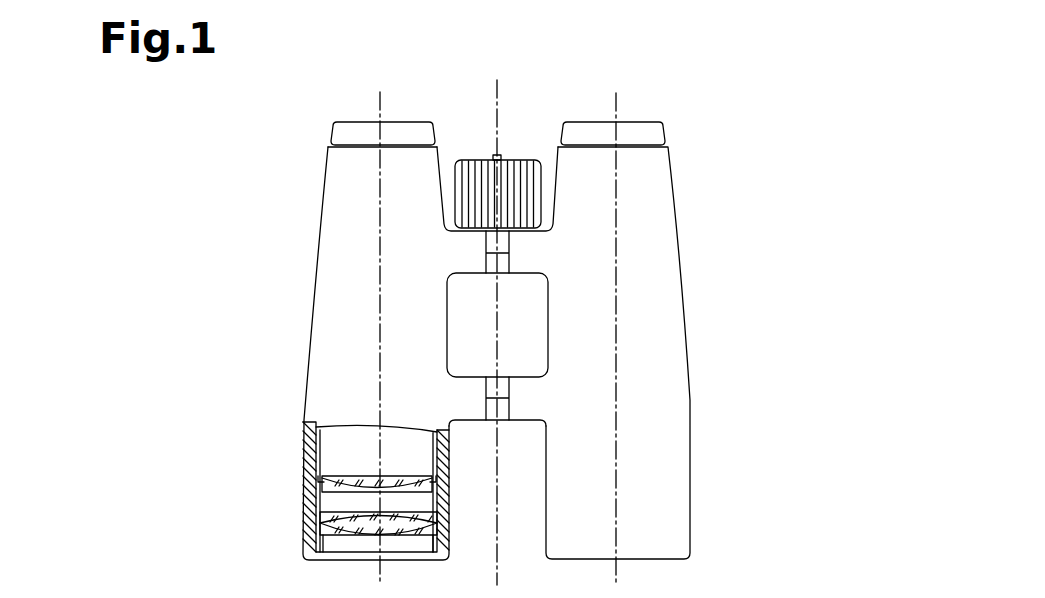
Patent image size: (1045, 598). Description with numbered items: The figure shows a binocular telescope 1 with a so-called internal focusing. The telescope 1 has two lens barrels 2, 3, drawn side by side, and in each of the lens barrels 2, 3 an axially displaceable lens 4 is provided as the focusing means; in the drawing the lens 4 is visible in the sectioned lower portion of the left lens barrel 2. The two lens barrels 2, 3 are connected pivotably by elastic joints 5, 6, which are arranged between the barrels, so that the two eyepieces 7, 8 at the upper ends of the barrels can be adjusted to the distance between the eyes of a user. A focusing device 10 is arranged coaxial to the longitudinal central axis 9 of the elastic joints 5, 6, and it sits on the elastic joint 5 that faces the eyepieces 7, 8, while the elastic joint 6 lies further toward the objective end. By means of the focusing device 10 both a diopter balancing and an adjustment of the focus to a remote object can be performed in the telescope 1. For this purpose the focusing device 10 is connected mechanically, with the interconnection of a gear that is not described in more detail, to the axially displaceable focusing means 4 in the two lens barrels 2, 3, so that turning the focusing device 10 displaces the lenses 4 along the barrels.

The binocular telescope 1 is at (797, 97).
The lens barrel 2 is at (326, 192).
The lens barrel 3 is at (669, 204).
The axially displaceable lens 4 is at (350, 476).
The elastic joint 5 is at (523, 253).
The elastic joint 6 is at (528, 405).
The eyepiece 7 is at (352, 125).
The eyepiece 8 is at (640, 125).
The longitudinal central axis 9 is at (496, 88).
The focusing device 10 is at (520, 160).